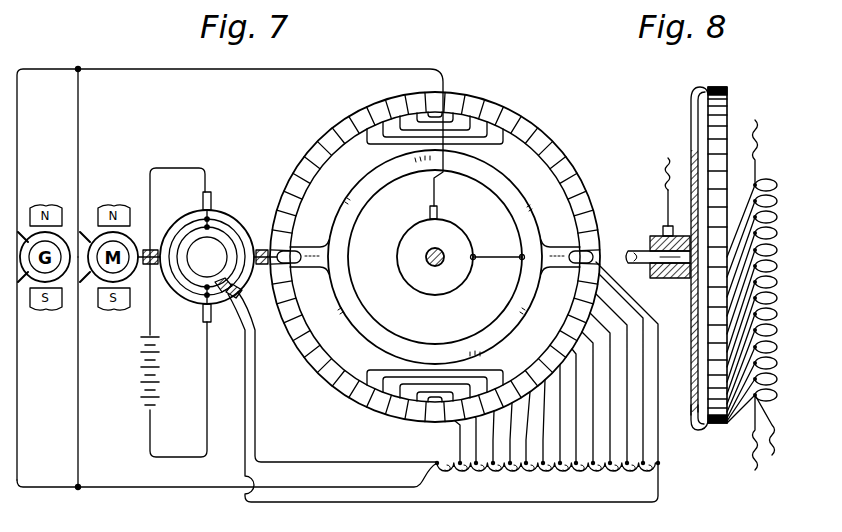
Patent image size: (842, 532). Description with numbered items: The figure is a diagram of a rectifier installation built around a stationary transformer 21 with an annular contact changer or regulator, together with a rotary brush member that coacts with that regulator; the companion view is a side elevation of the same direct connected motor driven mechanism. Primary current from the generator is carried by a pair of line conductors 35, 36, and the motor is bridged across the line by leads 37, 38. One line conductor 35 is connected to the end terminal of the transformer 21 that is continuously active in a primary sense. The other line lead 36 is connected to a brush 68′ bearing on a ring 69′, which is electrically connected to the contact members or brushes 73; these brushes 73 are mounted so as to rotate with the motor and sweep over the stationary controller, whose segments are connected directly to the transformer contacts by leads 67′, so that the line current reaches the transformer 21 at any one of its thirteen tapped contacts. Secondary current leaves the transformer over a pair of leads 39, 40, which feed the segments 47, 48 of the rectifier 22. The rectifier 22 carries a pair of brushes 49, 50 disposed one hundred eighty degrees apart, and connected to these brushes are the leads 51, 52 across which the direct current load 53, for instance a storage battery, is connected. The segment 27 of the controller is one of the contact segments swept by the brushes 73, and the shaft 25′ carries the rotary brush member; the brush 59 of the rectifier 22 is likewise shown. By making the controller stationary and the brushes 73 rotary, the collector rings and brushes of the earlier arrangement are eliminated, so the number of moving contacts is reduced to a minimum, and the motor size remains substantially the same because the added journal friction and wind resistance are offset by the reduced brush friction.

In FIG. 7, the transformer 21 is at (546, 471).
In FIG. 8, the transformer 21 is at (763, 295).
In FIG. 7, the rectifier 22 is at (207, 248).
In FIG. 7, the shaft 25′ is at (434, 267).
In FIG. 8, the shaft 25′ is at (642, 250).
In FIG. 7, the commutator segment 27 is at (560, 196).
In FIG. 7, the line conductor 35 is at (18, 436).
In FIG. 7, the line conductor 36 is at (18, 138).
In FIG. 8, the line conductor 36 is at (664, 174).
In FIG. 7, the motor lead 37 is at (80, 432).
In FIG. 7, the motor lead 38 is at (80, 146).
In FIG. 7, the secondary lead 39 is at (354, 464).
In FIG. 7, the secondary lead 40 is at (362, 503).
In FIG. 7, the rectifier segment 47 is at (226, 224).
In FIG. 7, the rectifier segment 48 is at (196, 300).
In FIG. 7, the rectifier brush 49 is at (212, 198).
In FIG. 7, the rectifier brush 50 is at (211, 318).
In FIG. 7, the load lead 51 is at (162, 328).
In FIG. 7, the load lead 52 is at (159, 432).
In FIG. 7, the direct current load 53 is at (158, 366).
In FIG. 7, the brush 59 is at (244, 285).
In FIG. 7, the leads 67′ is at (628, 438).
In FIG. 7, the brush 68′ is at (439, 216).
In FIG. 8, the brush 68′ is at (663, 228).
In FIG. 7, the ring 69′ is at (468, 250).
In FIG. 8, the ring 69′ is at (668, 279).
In FIG. 7, the contact members or brushes 73 is at (302, 268).
In FIG. 8, the contact members or brushes 73 is at (691, 108).